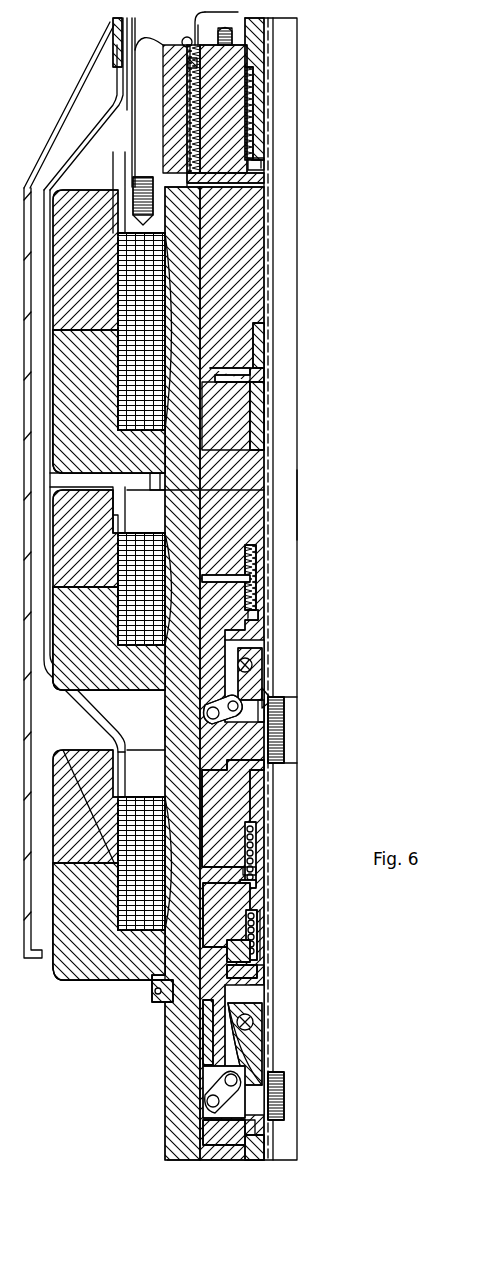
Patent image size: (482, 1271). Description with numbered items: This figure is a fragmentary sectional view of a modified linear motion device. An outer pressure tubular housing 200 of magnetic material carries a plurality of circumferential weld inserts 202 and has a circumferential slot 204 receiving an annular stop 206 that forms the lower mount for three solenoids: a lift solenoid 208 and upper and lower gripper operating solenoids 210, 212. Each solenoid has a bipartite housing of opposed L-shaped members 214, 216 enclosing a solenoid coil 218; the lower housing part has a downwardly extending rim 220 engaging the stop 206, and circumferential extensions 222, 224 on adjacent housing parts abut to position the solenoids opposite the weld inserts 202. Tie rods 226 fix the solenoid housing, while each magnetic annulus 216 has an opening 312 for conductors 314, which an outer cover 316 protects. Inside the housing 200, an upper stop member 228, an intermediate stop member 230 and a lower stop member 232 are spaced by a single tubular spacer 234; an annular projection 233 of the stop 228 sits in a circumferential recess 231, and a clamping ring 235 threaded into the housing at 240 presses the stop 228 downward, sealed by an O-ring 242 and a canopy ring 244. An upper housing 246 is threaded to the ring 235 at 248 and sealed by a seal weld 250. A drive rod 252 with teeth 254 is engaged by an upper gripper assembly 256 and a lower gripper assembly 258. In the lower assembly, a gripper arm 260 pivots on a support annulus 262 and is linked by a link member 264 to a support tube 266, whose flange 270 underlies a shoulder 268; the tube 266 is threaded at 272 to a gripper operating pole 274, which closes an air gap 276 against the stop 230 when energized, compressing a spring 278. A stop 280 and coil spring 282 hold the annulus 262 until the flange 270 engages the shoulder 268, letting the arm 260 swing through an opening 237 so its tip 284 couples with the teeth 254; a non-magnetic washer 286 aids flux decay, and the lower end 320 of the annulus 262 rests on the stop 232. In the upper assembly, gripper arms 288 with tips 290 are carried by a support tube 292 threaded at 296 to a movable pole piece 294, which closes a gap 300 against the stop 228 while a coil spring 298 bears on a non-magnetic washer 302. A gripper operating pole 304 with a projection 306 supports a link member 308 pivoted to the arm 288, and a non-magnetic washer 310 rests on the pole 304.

The outer pressure tubular housing 200 is at (111, 111).
The circumferential weld inserts 202 is at (217, 333).
The circumferential slot 204 is at (152, 985).
The annular stop 206 is at (157, 994).
The lift solenoid 208 is at (103, 353).
The upper gripper operating solenoid 210 is at (97, 631).
The lower gripper operating solenoid 212 is at (95, 908).
The L-shaped housing member 214 is at (150, 458).
The L-shaped housing member 216 is at (170, 120).
The solenoid coil 218 is at (133, 260).
The downwardly extending rim 220 is at (157, 963).
The circumferential extension 222 is at (163, 717).
The circumferential extension 224 is at (165, 490).
The tie rods 226 is at (115, 45).
The upper stop member 228 is at (258, 245).
The intermediate stop member 230 is at (240, 795).
The circumferential recess 231 is at (262, 176).
The lower stop member 232 is at (252, 1147).
The annular projection 233 is at (262, 186).
The tubular spacer 234 is at (260, 447).
The clamping ring 235 is at (205, 40).
The opening 237 is at (250, 980).
The threads 240 is at (170, 116).
The O-ring 242 is at (203, 43).
The canopy ring 244 is at (183, 42).
The upper housing 246 is at (255, 42).
The threads 248 is at (255, 92).
The circumferential seal weld 250 is at (260, 163).
The drive rod 252 is at (293, 503).
The teeth 254 is at (297, 757).
The upper gripper assembly 256 is at (253, 660).
The lower gripper assembly 258 is at (253, 1025).
The gripper arm 260 is at (253, 1043).
The support annulus 262 is at (260, 973).
The link member 264 is at (210, 1088).
The support tube 266 is at (213, 1033).
The downwardly facing shoulder 268 is at (210, 1117).
The circumferential flange 270 is at (207, 1137).
The threading 272 is at (247, 955).
The gripper operating pole 274 is at (250, 903).
The air gap 276 is at (245, 870).
The spring 278 is at (250, 828).
The stop 280 is at (253, 920).
The coil spring 282 is at (250, 943).
The tip 284 is at (250, 1083).
The non-magnetic washer 286 is at (250, 887).
The gripper arms 288 is at (263, 680).
The tips 290 is at (262, 723).
The upper gripper assembly support tube 292 is at (250, 613).
The movable pole piece 294 is at (240, 413).
The threads 296 is at (247, 560).
The coil spring 298 is at (260, 365).
The gap 300 is at (250, 376).
The non-magnetic washer 302 is at (263, 392).
The gripper operating pole 304 is at (243, 630).
The downwardly extending projection 306 is at (267, 688).
The link member 308 is at (277, 700).
The non-magnetic washer 310 is at (193, 585).
The opening 312 is at (113, 190).
The conductors 314 is at (114, 173).
The outer cover 316 is at (66, 120).
The lower end 320 is at (252, 1133).